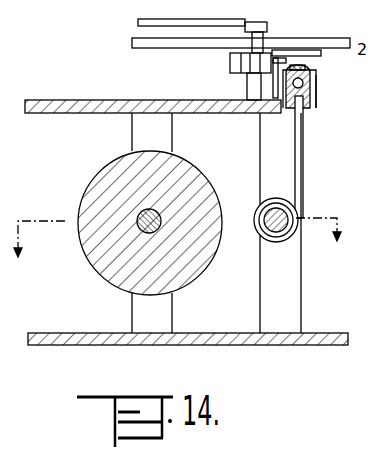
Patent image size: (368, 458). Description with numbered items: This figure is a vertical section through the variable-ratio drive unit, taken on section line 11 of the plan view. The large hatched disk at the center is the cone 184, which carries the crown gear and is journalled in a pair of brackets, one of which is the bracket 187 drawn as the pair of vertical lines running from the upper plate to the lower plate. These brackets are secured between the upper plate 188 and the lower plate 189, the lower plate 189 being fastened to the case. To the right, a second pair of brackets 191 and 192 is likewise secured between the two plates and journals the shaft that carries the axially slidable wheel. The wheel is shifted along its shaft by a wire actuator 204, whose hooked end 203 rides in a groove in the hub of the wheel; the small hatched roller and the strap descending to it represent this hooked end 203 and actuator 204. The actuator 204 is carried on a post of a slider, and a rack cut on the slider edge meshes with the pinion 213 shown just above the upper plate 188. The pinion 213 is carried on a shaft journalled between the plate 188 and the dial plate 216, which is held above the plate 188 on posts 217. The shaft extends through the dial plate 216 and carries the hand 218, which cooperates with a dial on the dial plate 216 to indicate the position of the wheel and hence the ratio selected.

The section line 11- 11 is at (187, 247).
The cone 184 is at (84, 247).
The bracket 187 is at (167, 319).
The plate 188 is at (48, 113).
The plate 189 is at (205, 346).
The bracket 191 is at (367, 137).
The bracket 192 is at (295, 314).
The hooked end 203 is at (291, 236).
The wire actuator 204 is at (304, 181).
The pinion 213 is at (230, 63).
The dial plate 216 is at (312, 38).
The posts 217 is at (321, 53).
The hand 218 is at (211, 16).